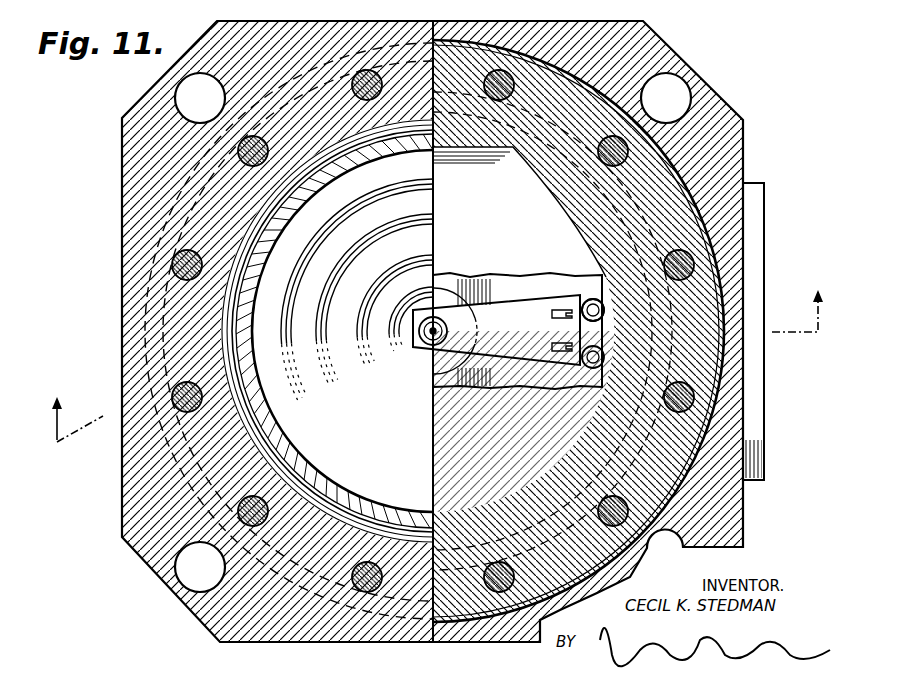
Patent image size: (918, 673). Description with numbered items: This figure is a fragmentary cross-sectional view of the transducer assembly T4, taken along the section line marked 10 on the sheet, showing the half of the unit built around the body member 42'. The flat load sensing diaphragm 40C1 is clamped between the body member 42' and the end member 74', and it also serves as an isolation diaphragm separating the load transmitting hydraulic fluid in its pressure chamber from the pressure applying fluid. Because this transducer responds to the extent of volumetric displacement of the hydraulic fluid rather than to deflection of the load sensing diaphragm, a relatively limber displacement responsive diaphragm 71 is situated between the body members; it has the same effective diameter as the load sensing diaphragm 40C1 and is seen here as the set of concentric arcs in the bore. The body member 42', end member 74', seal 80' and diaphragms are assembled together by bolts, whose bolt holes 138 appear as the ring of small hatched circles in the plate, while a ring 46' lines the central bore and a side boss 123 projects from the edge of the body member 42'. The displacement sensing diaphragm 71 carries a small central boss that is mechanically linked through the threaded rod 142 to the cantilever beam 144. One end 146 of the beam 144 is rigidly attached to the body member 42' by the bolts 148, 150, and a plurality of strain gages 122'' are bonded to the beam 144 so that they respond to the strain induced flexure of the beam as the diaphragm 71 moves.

The body member 42' is at (451, 336).
The end member 74' is at (621, 333).
The cylindrical bore liner 46' is at (327, 331).
The load sensing diaphragm 40C1 is at (540, 252).
The bolt holes 138 is at (500, 75).
The displacement responsive diaphragm 71 is at (350, 362).
The seal 80' is at (517, 386).
The cantilever beam 144 is at (496, 343).
The threaded rod 142 is at (428, 346).
The bolt 148 is at (594, 299).
The beam end 146 is at (580, 300).
The bolt 150 is at (593, 368).
The strain gages 122'' is at (536, 335).
The side boss 123 is at (764, 318).
The section line indicator 10 is at (440, 378).